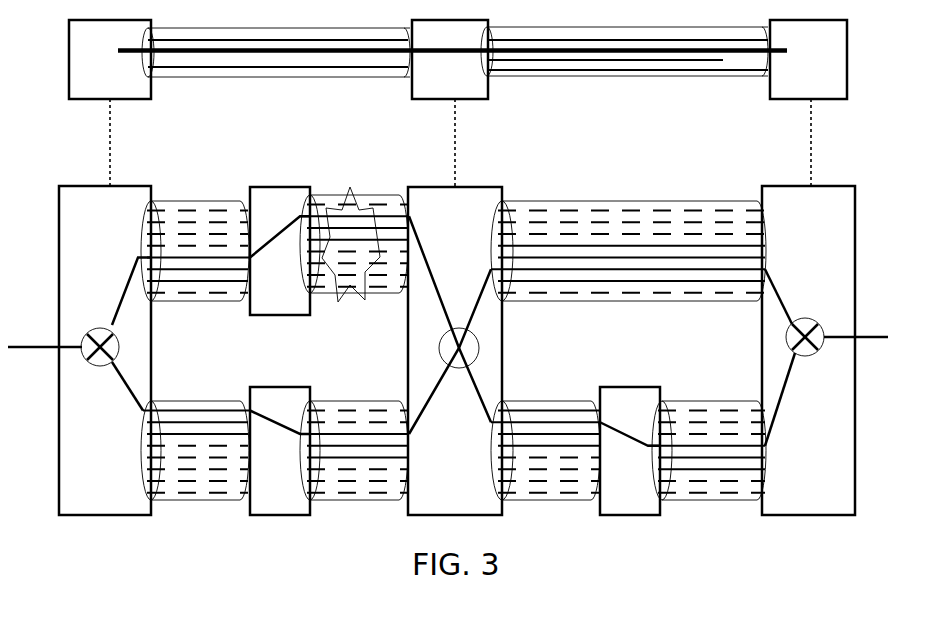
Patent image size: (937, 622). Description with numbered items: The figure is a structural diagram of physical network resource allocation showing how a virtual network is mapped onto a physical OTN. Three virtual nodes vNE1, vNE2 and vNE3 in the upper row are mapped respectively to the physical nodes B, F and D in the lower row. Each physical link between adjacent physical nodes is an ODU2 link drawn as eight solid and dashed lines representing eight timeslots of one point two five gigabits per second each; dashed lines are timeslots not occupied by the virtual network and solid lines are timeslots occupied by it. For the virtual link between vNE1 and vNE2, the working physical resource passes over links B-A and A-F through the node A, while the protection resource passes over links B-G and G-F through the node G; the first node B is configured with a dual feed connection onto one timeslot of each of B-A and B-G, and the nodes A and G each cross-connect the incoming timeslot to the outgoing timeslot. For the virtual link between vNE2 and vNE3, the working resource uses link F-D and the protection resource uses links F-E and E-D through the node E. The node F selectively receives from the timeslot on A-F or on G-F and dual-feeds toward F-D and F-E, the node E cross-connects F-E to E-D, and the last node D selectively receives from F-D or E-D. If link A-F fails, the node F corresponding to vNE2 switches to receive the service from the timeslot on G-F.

The virtual node vNE1 is at (110, 103).
The virtual node vNE2 is at (450, 103).
The virtual node vNE3 is at (808, 103).
The physical node A is at (280, 251).
The physical node B is at (79, 350).
The physical node D is at (825, 350).
The physical node E is at (630, 451).
The physical node F is at (455, 351).
The physical node G is at (280, 451).